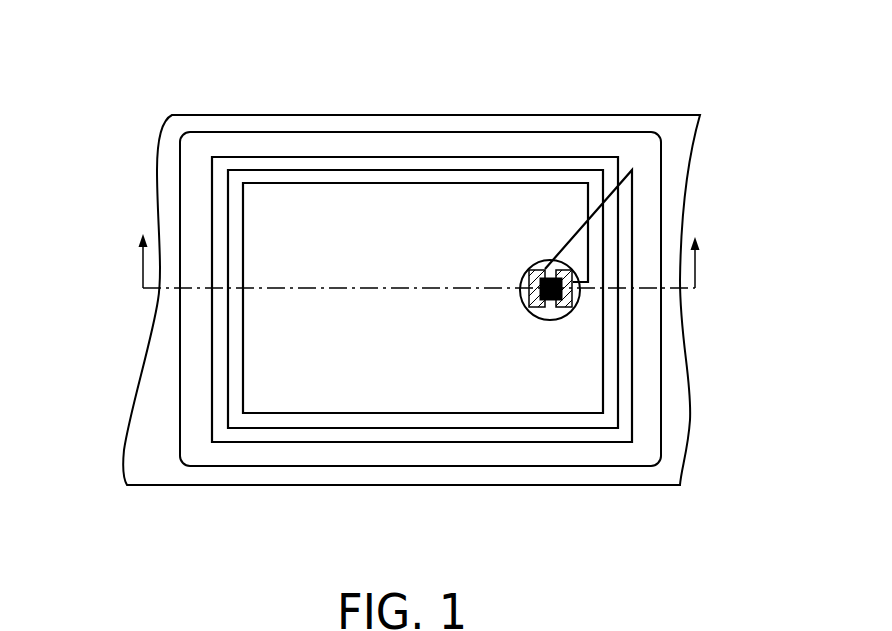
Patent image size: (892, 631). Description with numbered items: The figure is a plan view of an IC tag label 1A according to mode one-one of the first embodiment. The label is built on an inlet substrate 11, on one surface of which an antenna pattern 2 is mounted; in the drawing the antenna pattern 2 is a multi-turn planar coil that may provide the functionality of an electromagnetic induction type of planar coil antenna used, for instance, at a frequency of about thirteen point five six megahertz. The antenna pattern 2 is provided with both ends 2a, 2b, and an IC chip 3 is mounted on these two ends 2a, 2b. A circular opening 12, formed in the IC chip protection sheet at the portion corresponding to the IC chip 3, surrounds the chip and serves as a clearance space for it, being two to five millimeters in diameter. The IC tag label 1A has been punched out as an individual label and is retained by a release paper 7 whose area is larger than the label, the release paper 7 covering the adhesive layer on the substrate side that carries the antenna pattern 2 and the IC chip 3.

The IC tag label 1A is at (421, 96).
The release paper 7 is at (593, 485).
The inlet substrate 11 is at (661, 417).
The antenna pattern 2 is at (322, 452).
The end of antenna pattern 2a is at (530, 298).
The end of antenna pattern 2b is at (572, 306).
The IC chip 3 is at (552, 304).
The circular opening 12 is at (528, 267).